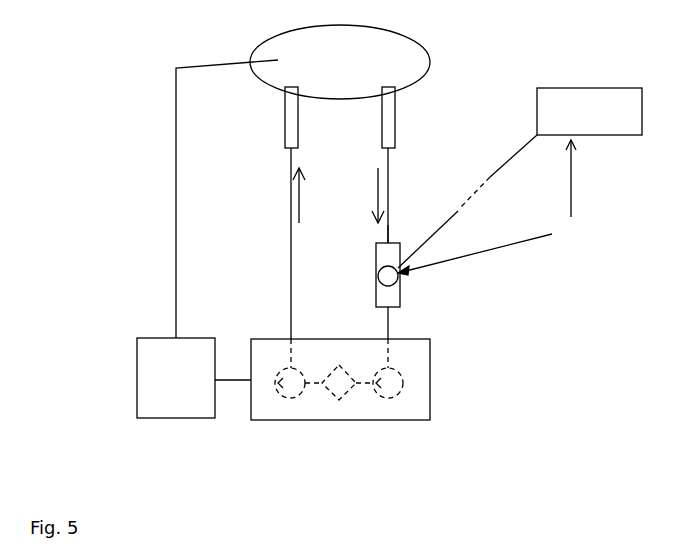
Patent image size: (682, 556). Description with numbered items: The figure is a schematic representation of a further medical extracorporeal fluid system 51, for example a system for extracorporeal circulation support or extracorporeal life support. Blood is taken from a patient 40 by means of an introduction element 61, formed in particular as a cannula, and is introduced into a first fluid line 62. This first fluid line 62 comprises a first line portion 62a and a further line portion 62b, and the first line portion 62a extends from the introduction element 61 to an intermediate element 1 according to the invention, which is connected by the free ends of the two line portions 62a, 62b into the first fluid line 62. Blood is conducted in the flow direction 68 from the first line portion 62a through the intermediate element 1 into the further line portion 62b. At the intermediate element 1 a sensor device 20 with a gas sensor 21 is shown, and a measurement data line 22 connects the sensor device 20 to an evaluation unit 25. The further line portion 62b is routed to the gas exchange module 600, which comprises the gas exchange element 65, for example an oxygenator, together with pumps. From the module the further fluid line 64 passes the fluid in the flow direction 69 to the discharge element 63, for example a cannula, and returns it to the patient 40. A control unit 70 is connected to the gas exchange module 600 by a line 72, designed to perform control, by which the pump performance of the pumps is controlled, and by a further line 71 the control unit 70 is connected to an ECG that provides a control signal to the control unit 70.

The patient 40 is at (355, 71).
The discharge element 63 is at (285, 128).
The introduction element 61 is at (395, 127).
The line 71 is at (175, 220).
The further fluid line 64 is at (291, 163).
The flow direction 69 is at (297, 200).
The first fluid line 62 is at (389, 160).
The flow direction 68 is at (386, 195).
The first line portion 62a is at (385, 233).
The further line portion 62b is at (389, 326).
The intermediate element 1 is at (400, 295).
The gas sensor 21 is at (389, 266).
The measurement data line 22 is at (457, 212).
The sensor device 20 is at (489, 207).
The evaluation unit 25 is at (595, 123).
The control unit 70 is at (182, 389).
The line 72 is at (233, 381).
The further gas exchange module 600 is at (323, 420).
The gas exchange element 65 is at (346, 396).
The further fluid system 51 is at (80, 370).